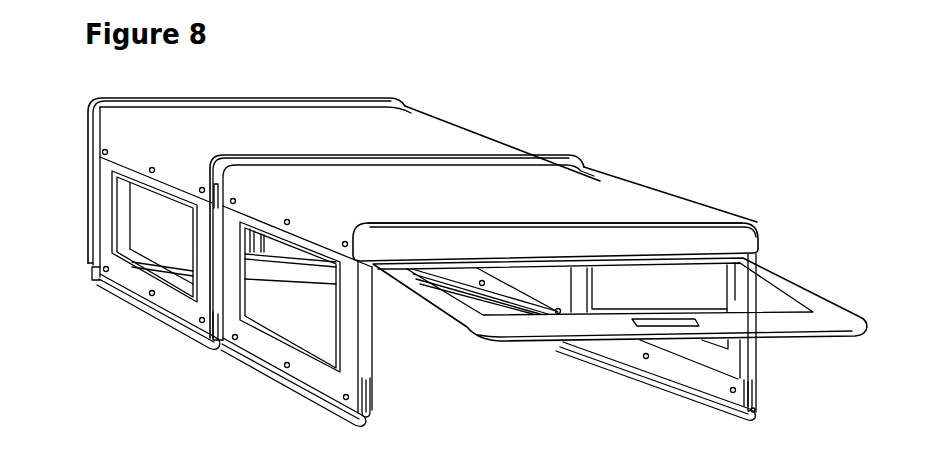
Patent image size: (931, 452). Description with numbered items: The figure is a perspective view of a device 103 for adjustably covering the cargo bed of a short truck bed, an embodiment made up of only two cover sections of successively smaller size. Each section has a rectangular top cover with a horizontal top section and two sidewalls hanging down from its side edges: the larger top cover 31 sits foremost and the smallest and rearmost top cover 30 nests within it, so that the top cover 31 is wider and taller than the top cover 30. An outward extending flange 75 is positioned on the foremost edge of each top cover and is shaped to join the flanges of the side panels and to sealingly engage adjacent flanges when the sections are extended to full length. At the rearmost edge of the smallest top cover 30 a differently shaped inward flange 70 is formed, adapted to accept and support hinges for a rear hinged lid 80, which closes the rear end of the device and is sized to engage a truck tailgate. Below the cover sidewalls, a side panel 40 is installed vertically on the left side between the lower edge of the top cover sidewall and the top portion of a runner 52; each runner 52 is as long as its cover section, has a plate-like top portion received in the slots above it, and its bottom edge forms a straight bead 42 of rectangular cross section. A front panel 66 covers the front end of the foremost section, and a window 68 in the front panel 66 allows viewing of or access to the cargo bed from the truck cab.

The device adapted for a short truck bed comprising two cover sections 103 is at (317, 63).
The outward extending flange 75 is at (133, 100).
The top cover 31 is at (428, 132).
The top cover 30 is at (600, 192).
The inward flange 70 is at (737, 234).
The rear hinged lid 80 is at (818, 300).
The runner 52 is at (757, 392).
The side panel 40 is at (320, 378).
The bead 42 is at (182, 328).
The front panel 66 is at (123, 232).
The window 68 is at (150, 222).